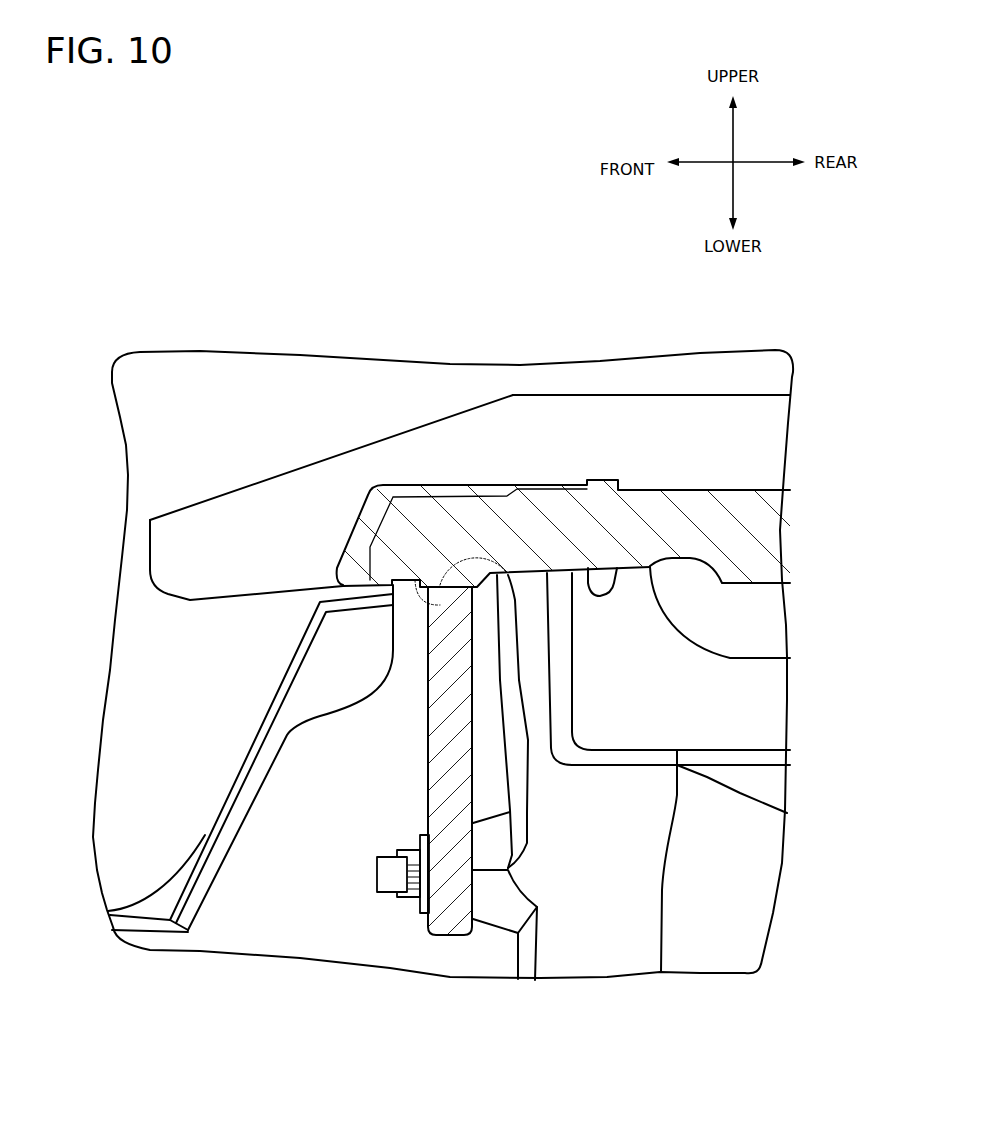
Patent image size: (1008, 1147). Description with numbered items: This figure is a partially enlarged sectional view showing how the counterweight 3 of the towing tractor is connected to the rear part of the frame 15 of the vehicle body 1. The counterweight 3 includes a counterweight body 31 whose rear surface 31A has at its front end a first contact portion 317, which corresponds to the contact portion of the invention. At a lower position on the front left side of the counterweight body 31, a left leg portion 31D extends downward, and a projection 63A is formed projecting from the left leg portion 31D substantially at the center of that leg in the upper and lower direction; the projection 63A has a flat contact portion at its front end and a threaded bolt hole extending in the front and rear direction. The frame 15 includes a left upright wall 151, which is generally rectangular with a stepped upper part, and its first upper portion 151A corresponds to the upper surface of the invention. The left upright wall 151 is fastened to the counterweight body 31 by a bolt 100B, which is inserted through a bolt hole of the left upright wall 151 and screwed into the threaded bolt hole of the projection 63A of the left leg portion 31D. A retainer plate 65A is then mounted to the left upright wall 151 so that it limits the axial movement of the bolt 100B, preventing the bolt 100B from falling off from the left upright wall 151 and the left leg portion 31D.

The vehicle body 1 is at (160, 805).
The counterweight 3 is at (652, 365).
The frame 15 is at (255, 720).
The counterweight body 31 is at (263, 474).
The rear surface 31A is at (605, 592).
The left leg portion 31D is at (610, 938).
The projection 63A is at (496, 918).
The retainer plate 65A is at (393, 875).
The bolt 100B is at (402, 897).
The left upright wall 151 is at (454, 764).
The first upper portion 151A is at (510, 574).
The first contact portion 317 is at (415, 578).